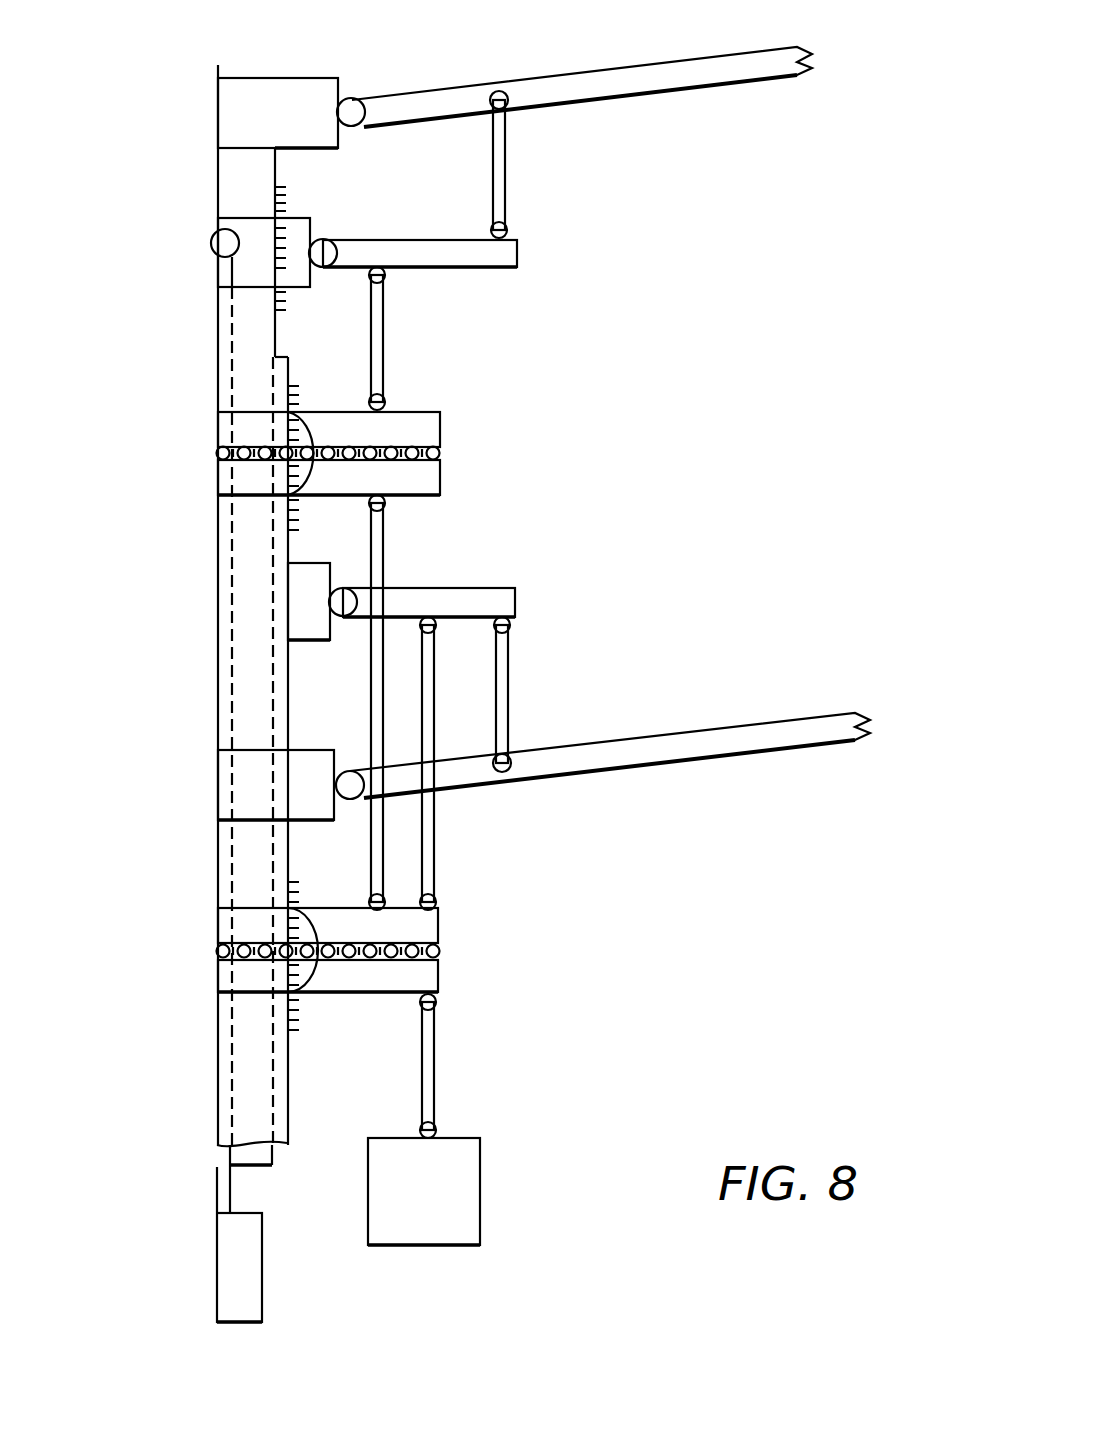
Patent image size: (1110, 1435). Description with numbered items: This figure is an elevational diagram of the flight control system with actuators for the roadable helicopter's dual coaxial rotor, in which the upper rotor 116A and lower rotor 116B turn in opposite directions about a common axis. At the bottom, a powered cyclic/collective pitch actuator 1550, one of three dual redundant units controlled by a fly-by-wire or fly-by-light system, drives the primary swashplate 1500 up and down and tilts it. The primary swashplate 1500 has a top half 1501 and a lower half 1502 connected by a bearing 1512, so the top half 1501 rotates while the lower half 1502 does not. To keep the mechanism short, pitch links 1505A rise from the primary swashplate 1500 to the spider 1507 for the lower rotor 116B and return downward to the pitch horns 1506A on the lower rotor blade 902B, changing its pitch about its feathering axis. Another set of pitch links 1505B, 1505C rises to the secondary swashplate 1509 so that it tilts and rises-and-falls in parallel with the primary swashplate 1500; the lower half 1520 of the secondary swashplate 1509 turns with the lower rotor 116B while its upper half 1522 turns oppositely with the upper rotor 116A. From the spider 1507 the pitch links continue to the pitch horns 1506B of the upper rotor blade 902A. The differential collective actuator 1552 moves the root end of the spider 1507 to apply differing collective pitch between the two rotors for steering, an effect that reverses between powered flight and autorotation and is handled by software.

The upper rotor 116A is at (316, 78).
The lower rotor 116B is at (225, 778).
The upper rotor blade 902A is at (585, 80).
The lower rotor blade 902B is at (660, 745).
The pitch link 1505A is at (508, 662).
The second pitch link 1505B is at (505, 232).
The pitch link 1505C is at (502, 155).
The pitch horn 1506A is at (507, 760).
The pitch horn 1506B is at (499, 93).
The spider 1507 is at (500, 253).
The secondary swashplate 1509 is at (251, 464).
The upper half of secondary swashplate 1522 is at (230, 425).
The lower half of secondary upper swashplate 1520 is at (215, 478).
The primary swashplate 1500 is at (257, 946).
The top half of primary swashplate 1501 is at (222, 922).
The lower half of primary swashplate 1502 is at (215, 970).
The bearing 1512 is at (437, 952).
The differential collective actuator 1552 is at (468, 1138).
The cyclic/collective pitch actuator 1550 is at (222, 1260).